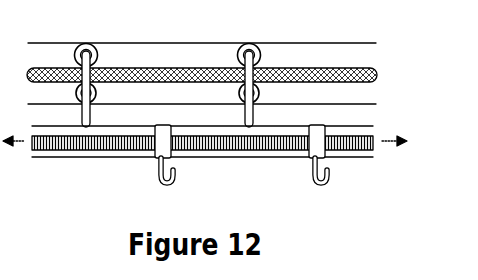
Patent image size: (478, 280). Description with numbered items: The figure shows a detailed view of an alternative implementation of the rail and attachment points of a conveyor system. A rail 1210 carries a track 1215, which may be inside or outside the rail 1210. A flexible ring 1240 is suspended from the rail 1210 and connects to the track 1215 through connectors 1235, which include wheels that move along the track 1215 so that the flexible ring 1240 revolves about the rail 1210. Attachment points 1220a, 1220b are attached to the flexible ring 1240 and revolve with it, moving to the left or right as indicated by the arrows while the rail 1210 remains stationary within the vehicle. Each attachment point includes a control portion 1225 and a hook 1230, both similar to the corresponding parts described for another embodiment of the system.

The rail 1210 is at (173, 43).
The track 1215 is at (40, 70).
The connectors 1235 is at (268, 55).
The control portion 1225 is at (322, 127).
The flexible ring 1240 is at (343, 158).
The attachment point 1220a is at (148, 166).
The attachment point 1220b is at (325, 174).
The hook 1230 is at (312, 168).